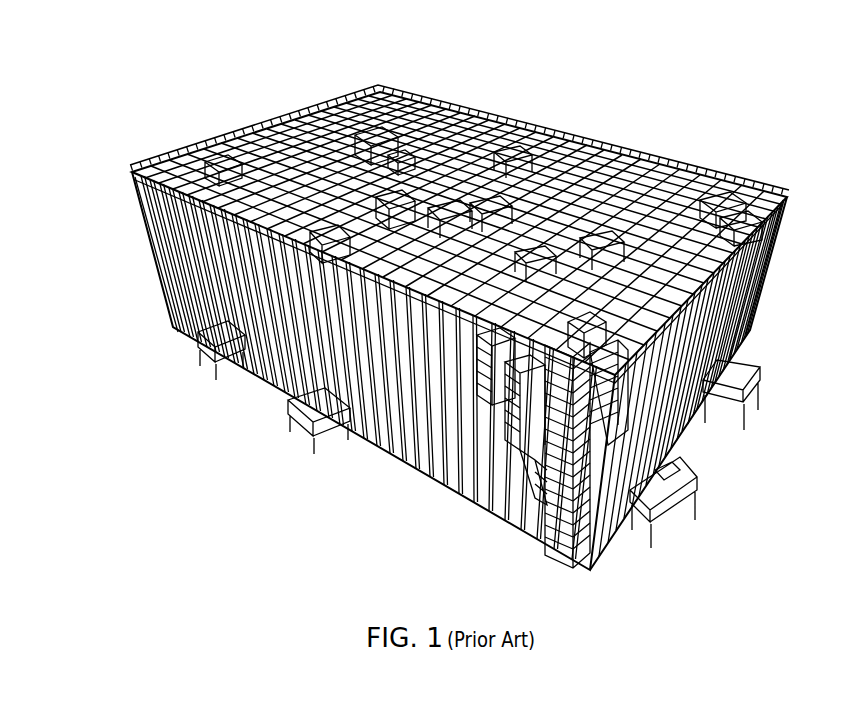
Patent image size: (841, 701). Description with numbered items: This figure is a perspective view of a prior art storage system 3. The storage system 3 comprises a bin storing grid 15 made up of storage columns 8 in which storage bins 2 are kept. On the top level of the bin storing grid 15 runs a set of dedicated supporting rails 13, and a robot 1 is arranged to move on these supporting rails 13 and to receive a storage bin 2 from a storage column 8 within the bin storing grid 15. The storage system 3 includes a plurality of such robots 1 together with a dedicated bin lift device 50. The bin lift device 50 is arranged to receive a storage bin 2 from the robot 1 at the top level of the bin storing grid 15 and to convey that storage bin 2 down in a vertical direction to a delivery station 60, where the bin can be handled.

The robot 1 is at (475, 122).
The storage bin 2 is at (515, 132).
The storage system 3 is at (120, 109).
The storage column 8 is at (378, 100).
The supporting rails 13 is at (603, 167).
The bin storing grid 15 is at (123, 280).
The bin lift device 50 is at (312, 350).
The delivery station 60 is at (320, 420).